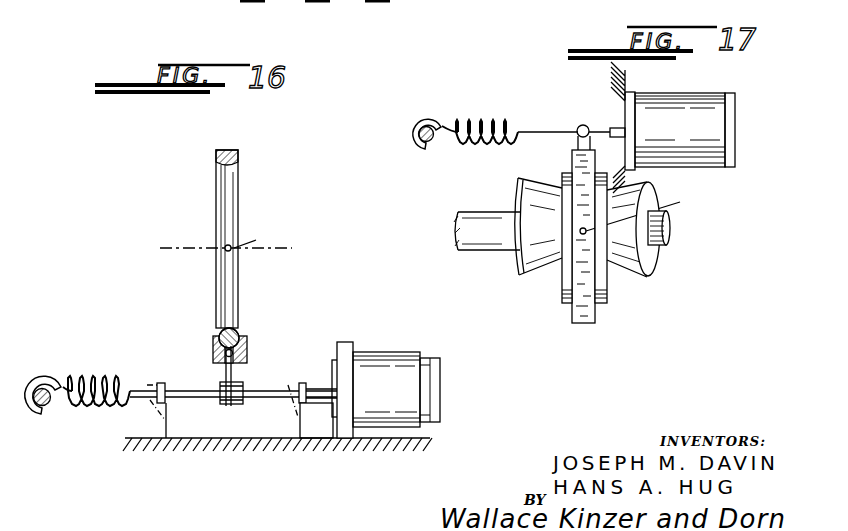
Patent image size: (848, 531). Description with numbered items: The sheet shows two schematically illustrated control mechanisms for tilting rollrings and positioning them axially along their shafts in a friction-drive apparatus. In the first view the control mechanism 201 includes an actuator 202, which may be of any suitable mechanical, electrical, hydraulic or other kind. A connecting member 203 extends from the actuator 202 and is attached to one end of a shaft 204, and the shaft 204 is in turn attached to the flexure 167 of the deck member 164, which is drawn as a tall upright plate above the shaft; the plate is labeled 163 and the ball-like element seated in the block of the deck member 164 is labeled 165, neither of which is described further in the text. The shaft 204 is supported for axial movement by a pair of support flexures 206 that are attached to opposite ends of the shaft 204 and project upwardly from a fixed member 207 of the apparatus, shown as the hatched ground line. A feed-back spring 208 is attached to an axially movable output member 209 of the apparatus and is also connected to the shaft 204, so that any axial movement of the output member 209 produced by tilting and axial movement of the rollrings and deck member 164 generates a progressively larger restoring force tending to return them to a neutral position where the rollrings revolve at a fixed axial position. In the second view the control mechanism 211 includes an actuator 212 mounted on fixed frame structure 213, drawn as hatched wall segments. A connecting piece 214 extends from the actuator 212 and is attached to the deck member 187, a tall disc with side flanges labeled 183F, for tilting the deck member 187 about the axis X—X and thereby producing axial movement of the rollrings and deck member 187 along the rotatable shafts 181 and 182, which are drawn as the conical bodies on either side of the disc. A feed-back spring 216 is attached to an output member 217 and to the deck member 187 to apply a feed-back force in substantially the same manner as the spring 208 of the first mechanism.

In FIG. 16, the control mechanism 201 is at (130, 300).
In FIG. 16, the vertical bar 163 is at (233, 299).
In FIG. 16, the deck member 164 is at (246, 350).
In FIG. 16, the ball 165 is at (241, 328).
In FIG. 16, the flexure 167 is at (232, 373).
In FIG. 16, the actuator 202 is at (378, 362).
In FIG. 16, the connecting member 203 is at (315, 388).
In FIG. 16, the shaft 204 is at (182, 388).
In FIG. 16, the support flexures 206 is at (170, 419).
In FIG. 16, the fixed member 207 is at (268, 440).
In FIG. 16, the feed-back spring 208 is at (88, 377).
In FIG. 16, the output member 209 is at (48, 404).
In FIG. 17, the control mechanism 211 is at (494, 93).
In FIG. 17, the actuator 212 is at (708, 97).
In FIG. 17, the fixed frame structure 213 is at (608, 122).
In FIG. 17, the connecting piece 214 is at (596, 113).
In FIG. 17, the feed-back spring 216 is at (500, 150).
In FIG. 17, the output member 217 is at (433, 141).
In FIG. 17, the deck member 187 is at (590, 324).
In FIG. 17, the flange 183F is at (568, 303).
In FIG. 17, the rotatable shaft 182 is at (533, 276).
In FIG. 17, the rotatable shaft 181 is at (640, 278).